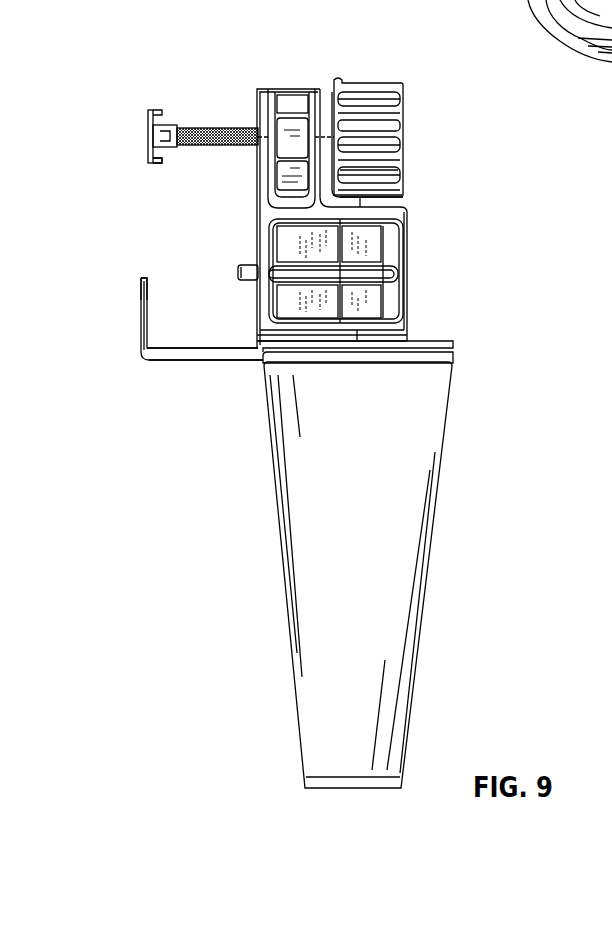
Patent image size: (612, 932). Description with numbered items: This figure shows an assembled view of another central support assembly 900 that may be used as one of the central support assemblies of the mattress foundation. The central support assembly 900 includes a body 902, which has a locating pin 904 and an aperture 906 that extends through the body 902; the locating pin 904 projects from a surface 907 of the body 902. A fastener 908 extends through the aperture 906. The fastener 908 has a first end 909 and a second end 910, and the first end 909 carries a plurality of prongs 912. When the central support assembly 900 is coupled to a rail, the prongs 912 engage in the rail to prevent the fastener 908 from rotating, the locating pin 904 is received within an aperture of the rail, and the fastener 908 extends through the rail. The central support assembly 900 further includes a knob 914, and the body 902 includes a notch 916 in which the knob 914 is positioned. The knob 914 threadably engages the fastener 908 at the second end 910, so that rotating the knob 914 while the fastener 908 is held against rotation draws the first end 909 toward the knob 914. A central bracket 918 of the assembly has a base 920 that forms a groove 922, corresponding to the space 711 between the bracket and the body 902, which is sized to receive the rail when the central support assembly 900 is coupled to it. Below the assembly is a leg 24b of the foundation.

The central support assembly 900 is at (197, 28).
The body 902 is at (393, 248).
The locating pin 904 is at (248, 264).
The aperture 906 is at (253, 150).
The surface 907 is at (257, 200).
The fastener 908 is at (228, 127).
The first end 909 is at (150, 124).
The second end 910 is at (378, 122).
The prongs 912 is at (158, 162).
The knob 914 is at (388, 177).
The notch 916 is at (393, 205).
The central bracket 918 is at (143, 300).
The space 711 is at (142, 333).
The base 920 is at (160, 358).
The groove 922 is at (236, 354).
The leg 24b is at (392, 500).